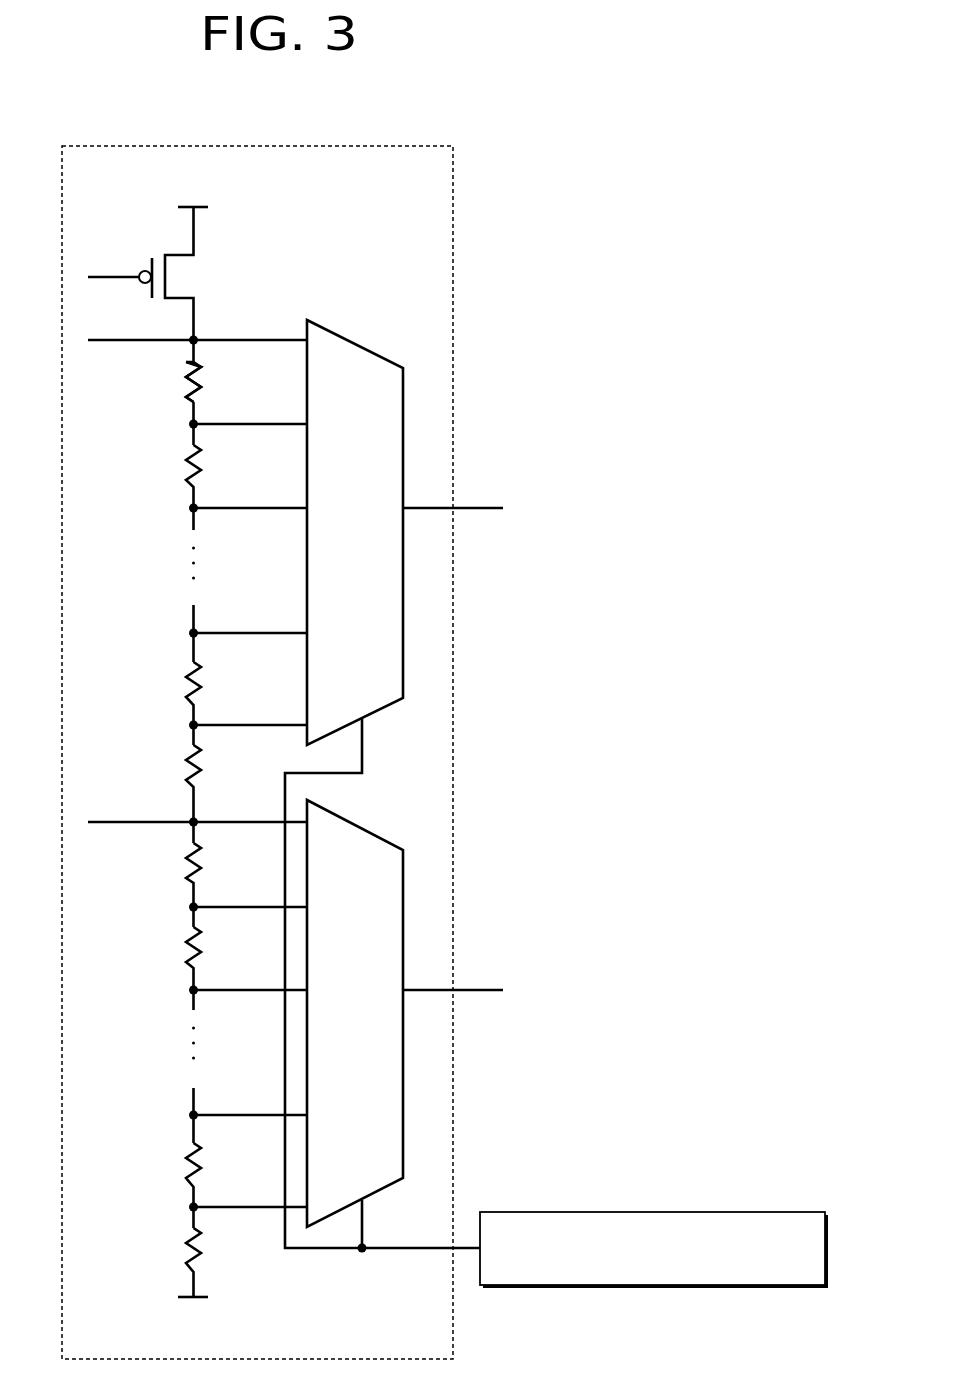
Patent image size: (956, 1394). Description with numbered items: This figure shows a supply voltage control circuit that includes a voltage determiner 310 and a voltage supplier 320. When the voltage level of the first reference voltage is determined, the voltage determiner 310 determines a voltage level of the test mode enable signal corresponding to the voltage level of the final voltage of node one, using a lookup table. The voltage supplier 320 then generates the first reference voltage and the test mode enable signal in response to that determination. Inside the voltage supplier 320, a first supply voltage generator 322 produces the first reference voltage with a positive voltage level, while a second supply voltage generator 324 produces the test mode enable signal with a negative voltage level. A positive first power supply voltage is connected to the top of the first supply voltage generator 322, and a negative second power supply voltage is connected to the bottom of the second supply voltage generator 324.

The voltage supplier 320 is at (288, 145).
The first supply voltage generator 322 is at (348, 340).
The second supply voltage generator 324 is at (365, 830).
The voltage determiner 310 is at (673, 1212).